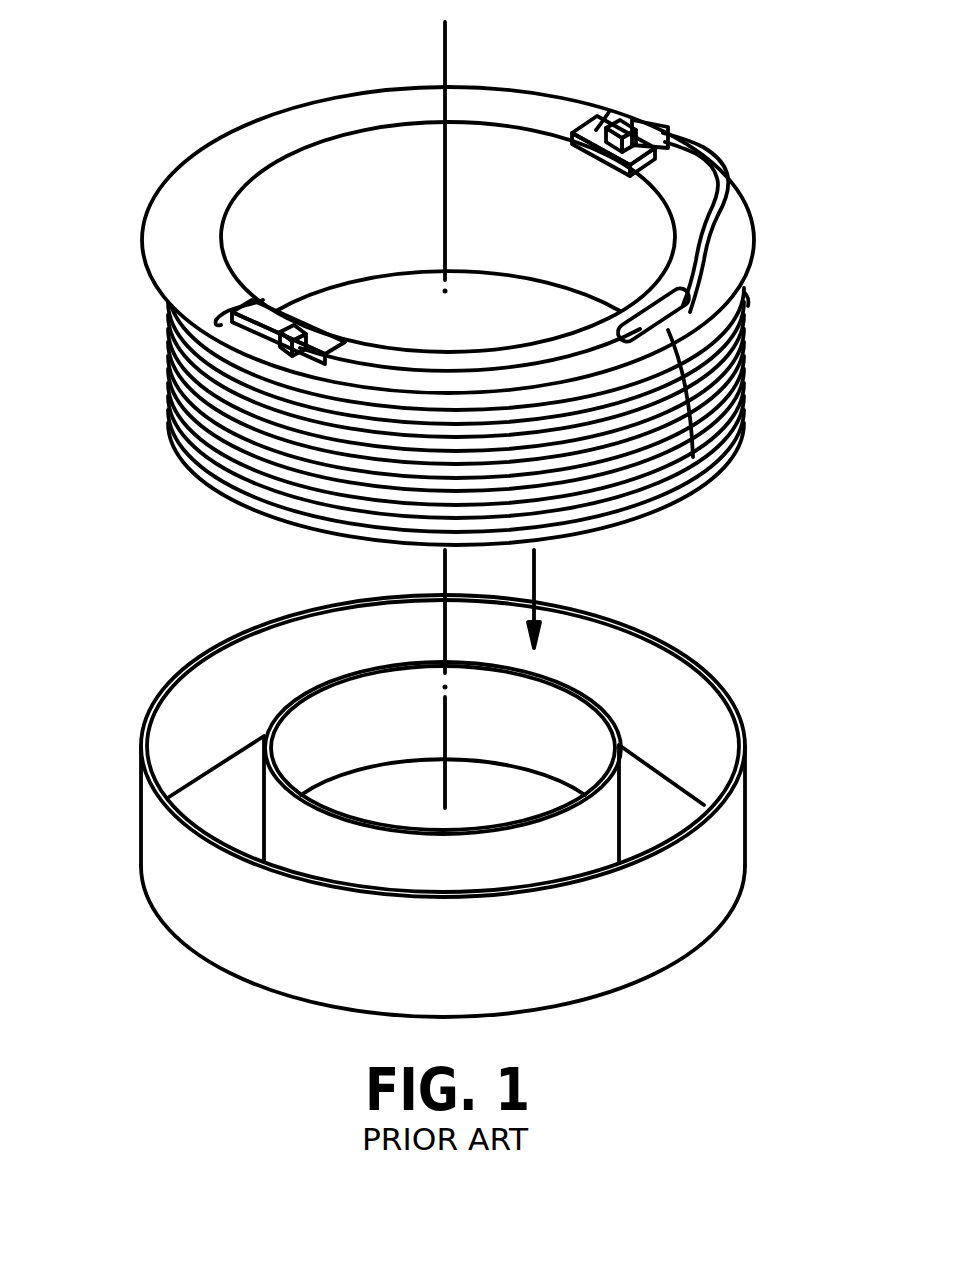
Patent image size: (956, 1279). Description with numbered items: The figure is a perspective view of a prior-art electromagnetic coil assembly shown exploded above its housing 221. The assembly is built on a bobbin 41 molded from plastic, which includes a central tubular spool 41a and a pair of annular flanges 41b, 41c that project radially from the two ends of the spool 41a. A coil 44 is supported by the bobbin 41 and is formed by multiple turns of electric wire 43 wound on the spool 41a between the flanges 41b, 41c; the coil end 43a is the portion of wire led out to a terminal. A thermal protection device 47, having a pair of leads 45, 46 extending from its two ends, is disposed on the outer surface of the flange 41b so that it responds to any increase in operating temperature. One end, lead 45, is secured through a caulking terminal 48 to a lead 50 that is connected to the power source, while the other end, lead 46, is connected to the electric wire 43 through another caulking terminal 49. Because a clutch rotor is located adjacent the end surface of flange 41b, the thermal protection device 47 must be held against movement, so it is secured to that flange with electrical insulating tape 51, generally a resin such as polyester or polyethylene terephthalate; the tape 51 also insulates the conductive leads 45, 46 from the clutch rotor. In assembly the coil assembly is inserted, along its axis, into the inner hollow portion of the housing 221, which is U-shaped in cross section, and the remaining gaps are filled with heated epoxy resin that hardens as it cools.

The bobbin 41 is at (350, 84).
The central tubular spool 41a is at (287, 192).
The annular flange 41b is at (505, 107).
The annular flange 41c is at (152, 366).
The electric wire 43 is at (297, 466).
The coil end wire 43a is at (611, 110).
The coil 44 is at (752, 300).
The lead 45 is at (428, 357).
The lead 46 is at (712, 213).
The thermal protection device 47 is at (638, 312).
The caulking terminal 48 is at (300, 336).
The caulking terminal 49 is at (640, 114).
The lead 50 is at (263, 300).
The electrical insulating tape 51 is at (667, 128).
The housing 221 is at (728, 838).